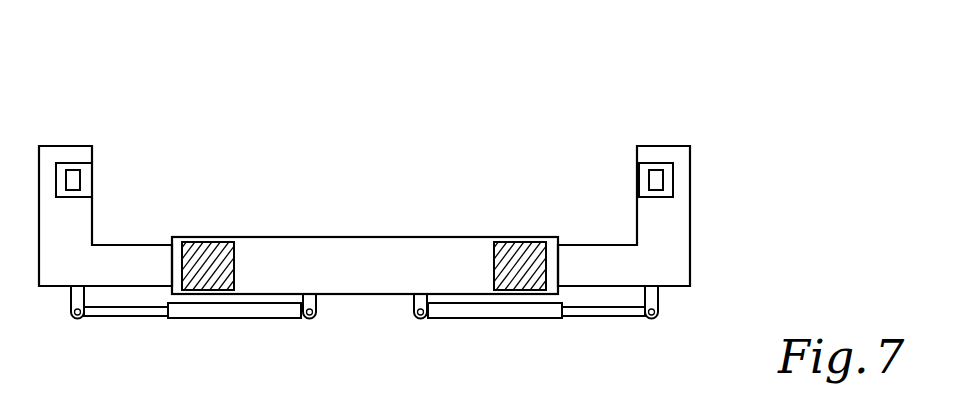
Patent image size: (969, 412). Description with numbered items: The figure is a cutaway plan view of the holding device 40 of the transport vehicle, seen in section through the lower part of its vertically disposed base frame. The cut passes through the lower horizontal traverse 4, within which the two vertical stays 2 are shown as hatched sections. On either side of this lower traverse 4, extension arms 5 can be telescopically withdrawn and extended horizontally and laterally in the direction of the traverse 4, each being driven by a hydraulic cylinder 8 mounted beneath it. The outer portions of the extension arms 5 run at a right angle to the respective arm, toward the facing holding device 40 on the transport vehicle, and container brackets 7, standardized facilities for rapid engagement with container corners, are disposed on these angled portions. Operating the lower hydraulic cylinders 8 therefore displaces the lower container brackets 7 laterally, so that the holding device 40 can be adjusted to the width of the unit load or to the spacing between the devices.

The holding device 40 is at (724, 56).
The extension arm 5 is at (57, 268).
The horizontal traverse 4 is at (353, 276).
The vertical stay 2 is at (206, 250).
The container bracket 7 is at (80, 178).
The hydraulic cylinder 8 is at (220, 318).